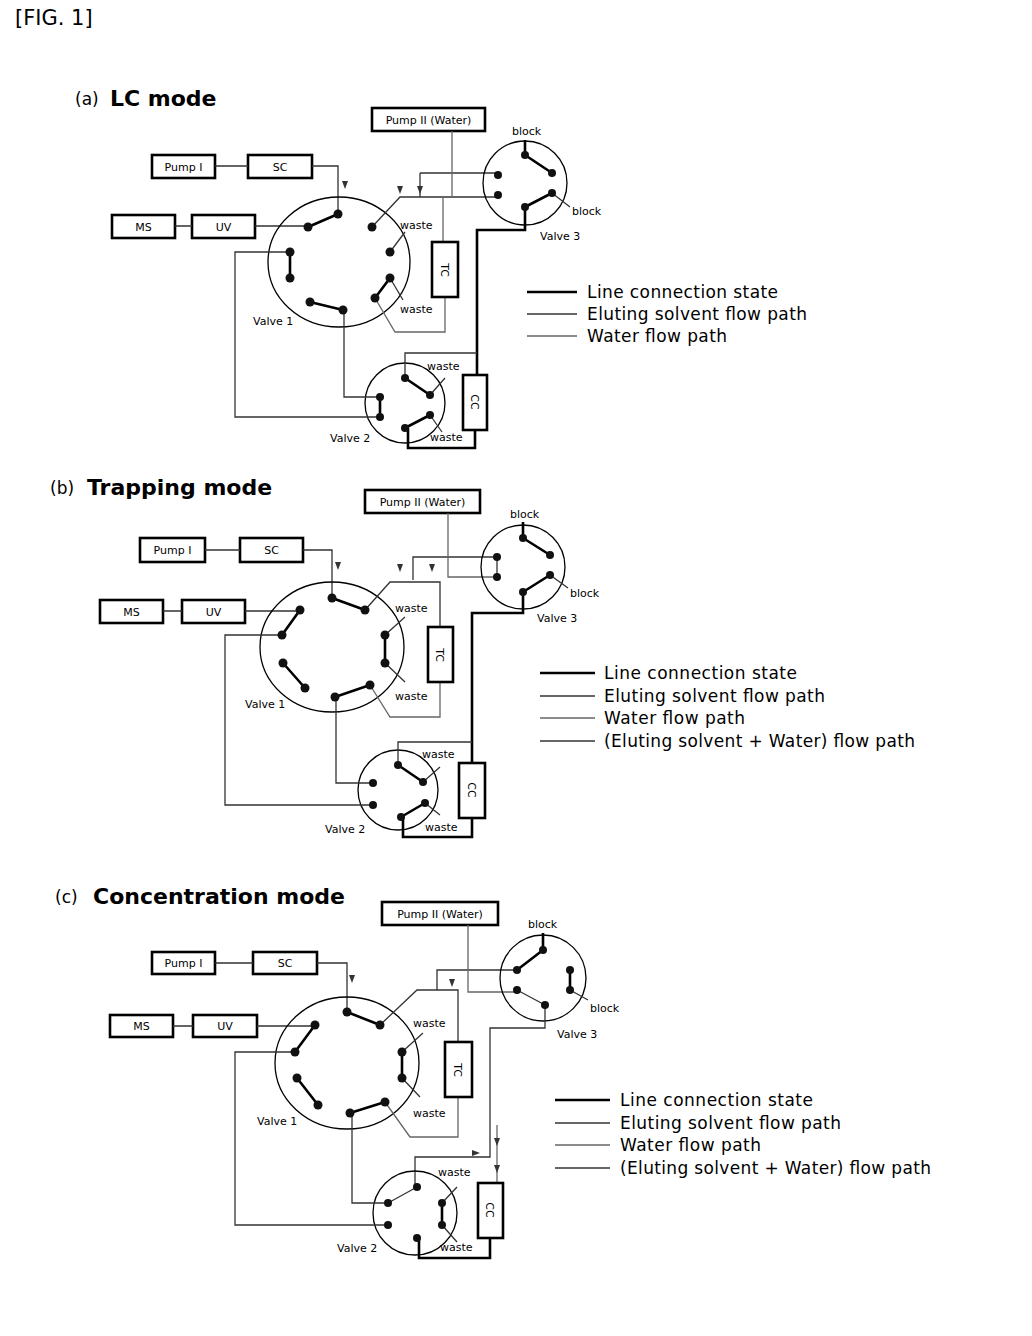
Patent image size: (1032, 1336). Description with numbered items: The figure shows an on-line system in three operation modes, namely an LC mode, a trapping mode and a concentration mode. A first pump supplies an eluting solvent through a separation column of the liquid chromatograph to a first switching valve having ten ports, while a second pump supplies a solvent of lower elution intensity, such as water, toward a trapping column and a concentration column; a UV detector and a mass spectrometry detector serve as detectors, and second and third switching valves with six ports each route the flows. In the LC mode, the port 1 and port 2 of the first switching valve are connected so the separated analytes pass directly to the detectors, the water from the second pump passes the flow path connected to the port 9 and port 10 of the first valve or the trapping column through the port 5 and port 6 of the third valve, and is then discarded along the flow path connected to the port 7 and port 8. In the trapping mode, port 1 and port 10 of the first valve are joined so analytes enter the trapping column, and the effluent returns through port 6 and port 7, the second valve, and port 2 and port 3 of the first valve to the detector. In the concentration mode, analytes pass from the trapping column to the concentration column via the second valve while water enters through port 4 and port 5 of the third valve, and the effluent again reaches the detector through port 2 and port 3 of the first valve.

The port 1 is at (438, 681).
The port 2 is at (435, 687).
The port 3 is at (426, 700).
The port 4 is at (414, 710).
The port 5 is at (416, 713).
The port 6 is at (431, 698).
The port 7 is at (373, 694).
The port 8 is at (387, 677).
The port 9 is at (386, 655).
The port 10 is at (364, 635).